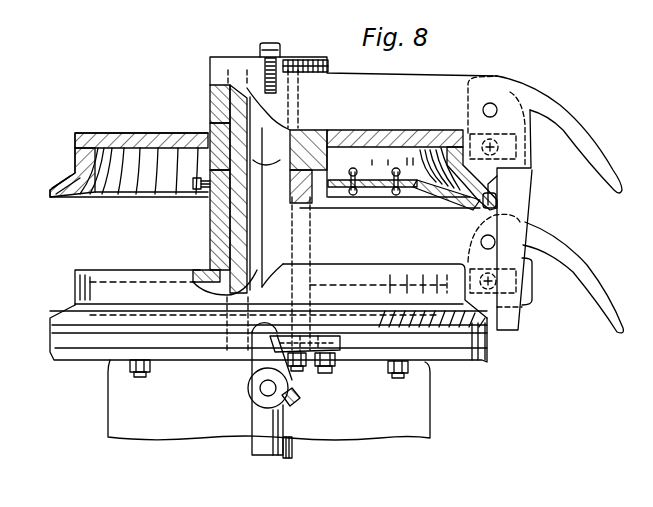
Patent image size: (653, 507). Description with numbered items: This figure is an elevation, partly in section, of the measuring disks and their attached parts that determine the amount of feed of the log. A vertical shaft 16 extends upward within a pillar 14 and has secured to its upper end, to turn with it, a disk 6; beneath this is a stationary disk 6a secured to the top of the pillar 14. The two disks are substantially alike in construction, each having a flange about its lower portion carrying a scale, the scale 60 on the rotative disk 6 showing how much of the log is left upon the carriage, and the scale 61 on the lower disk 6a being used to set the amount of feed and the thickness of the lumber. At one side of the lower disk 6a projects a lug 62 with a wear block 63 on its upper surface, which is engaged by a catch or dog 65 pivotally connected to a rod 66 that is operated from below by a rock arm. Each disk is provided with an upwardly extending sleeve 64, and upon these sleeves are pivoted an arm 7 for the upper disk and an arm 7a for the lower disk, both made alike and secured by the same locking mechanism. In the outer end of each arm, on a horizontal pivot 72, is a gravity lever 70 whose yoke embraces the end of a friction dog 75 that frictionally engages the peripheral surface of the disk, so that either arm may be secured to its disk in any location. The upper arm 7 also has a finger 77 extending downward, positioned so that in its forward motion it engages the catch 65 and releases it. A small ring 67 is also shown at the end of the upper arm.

The disk 6 is at (134, 133).
The stationary disk 6a is at (123, 270).
The scale 60 is at (68, 175).
The scale 61 is at (62, 314).
The lug 62 is at (312, 358).
The wear block 63 is at (317, 351).
The sleeve 64 is at (233, 100).
The catch or dog 65 is at (256, 336).
The rod 66 is at (262, 422).
The vertical shaft 16 is at (293, 458).
The pillar 14 is at (113, 421).
The arm 7 is at (370, 126).
The arm 7a is at (357, 274).
The horizontal pivot 72 is at (481, 242).
The friction dog 75 is at (517, 147).
The seal ring 67 is at (497, 201).
The gravity lever 70 is at (592, 144).
The finger 77 is at (512, 313).